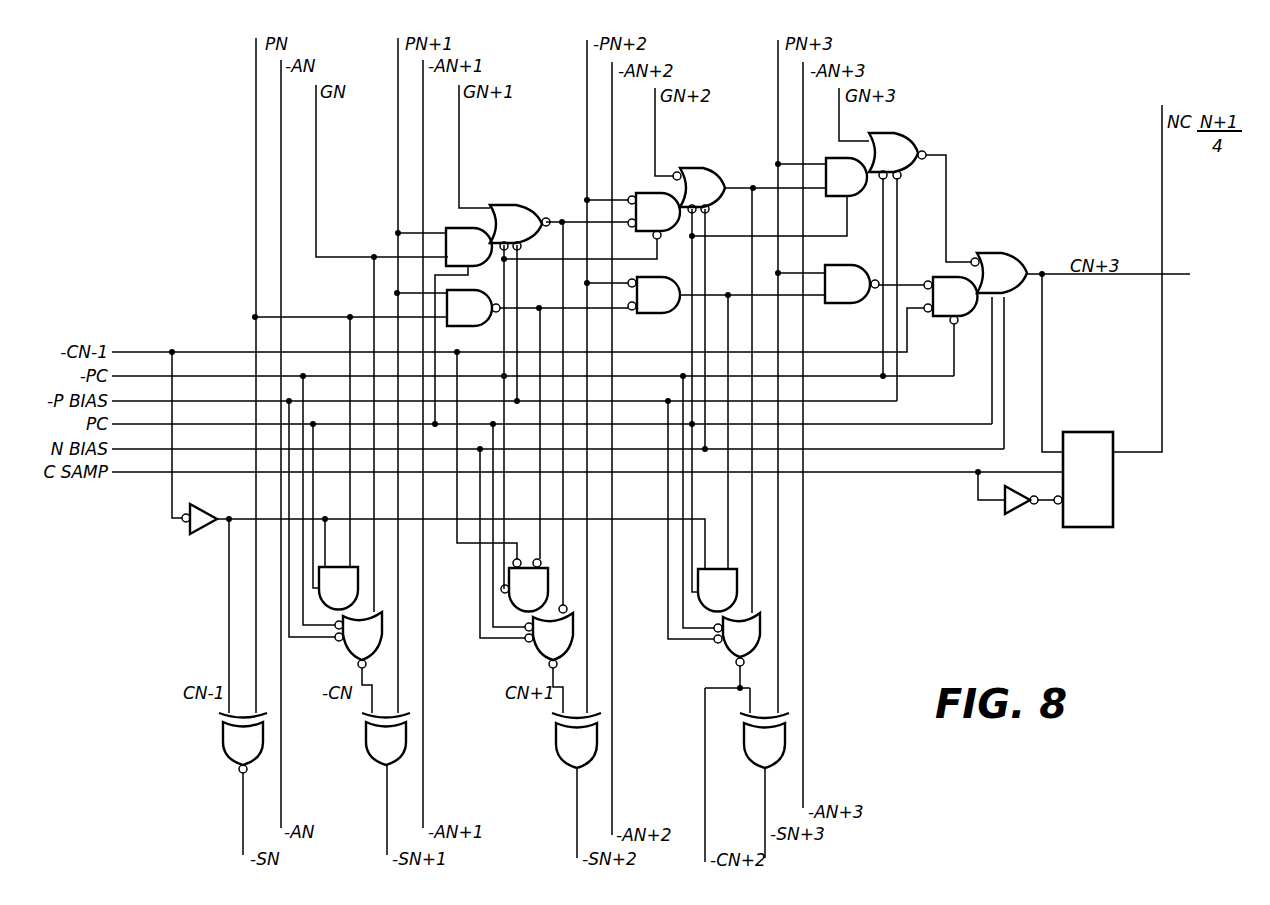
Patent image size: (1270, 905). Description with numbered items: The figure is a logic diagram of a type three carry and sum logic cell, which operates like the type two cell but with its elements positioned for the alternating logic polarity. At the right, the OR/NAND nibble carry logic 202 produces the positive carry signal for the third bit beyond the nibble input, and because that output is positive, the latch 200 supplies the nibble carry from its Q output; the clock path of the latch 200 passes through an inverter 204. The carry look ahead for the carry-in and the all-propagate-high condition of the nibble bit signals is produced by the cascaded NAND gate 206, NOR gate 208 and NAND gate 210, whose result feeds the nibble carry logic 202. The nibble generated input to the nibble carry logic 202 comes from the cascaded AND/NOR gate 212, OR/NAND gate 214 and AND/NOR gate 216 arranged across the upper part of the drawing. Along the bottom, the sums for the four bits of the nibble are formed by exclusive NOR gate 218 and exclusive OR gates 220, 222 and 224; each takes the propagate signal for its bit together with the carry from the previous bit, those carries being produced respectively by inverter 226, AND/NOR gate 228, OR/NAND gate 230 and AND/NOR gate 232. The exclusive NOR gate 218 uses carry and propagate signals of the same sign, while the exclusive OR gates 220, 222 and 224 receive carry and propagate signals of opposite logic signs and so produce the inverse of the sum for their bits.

The latch 200 is at (1083, 432).
The OR/NAND logic 202 is at (1003, 253).
The inverter 204 is at (1027, 512).
The NAND gate 206 is at (455, 326).
The NOR gate 208 is at (660, 313).
The NAND gate 210 is at (852, 303).
The AND/NOR gate 212 is at (510, 205).
The OR/NAND gate 214 is at (697, 168).
The AND/NOR gate 216 is at (903, 133).
The exclusive NOR gate 218 is at (222, 746).
The exclusive OR gate 220 is at (365, 746).
The exclusive OR gate 222 is at (557, 740).
The exclusive OR gate 224 is at (748, 740).
The inverter 226 is at (202, 534).
The AND/NOR gate 228 is at (352, 650).
The OR/NAND gate 230 is at (537, 648).
The AND/NOR gate 232 is at (722, 650).